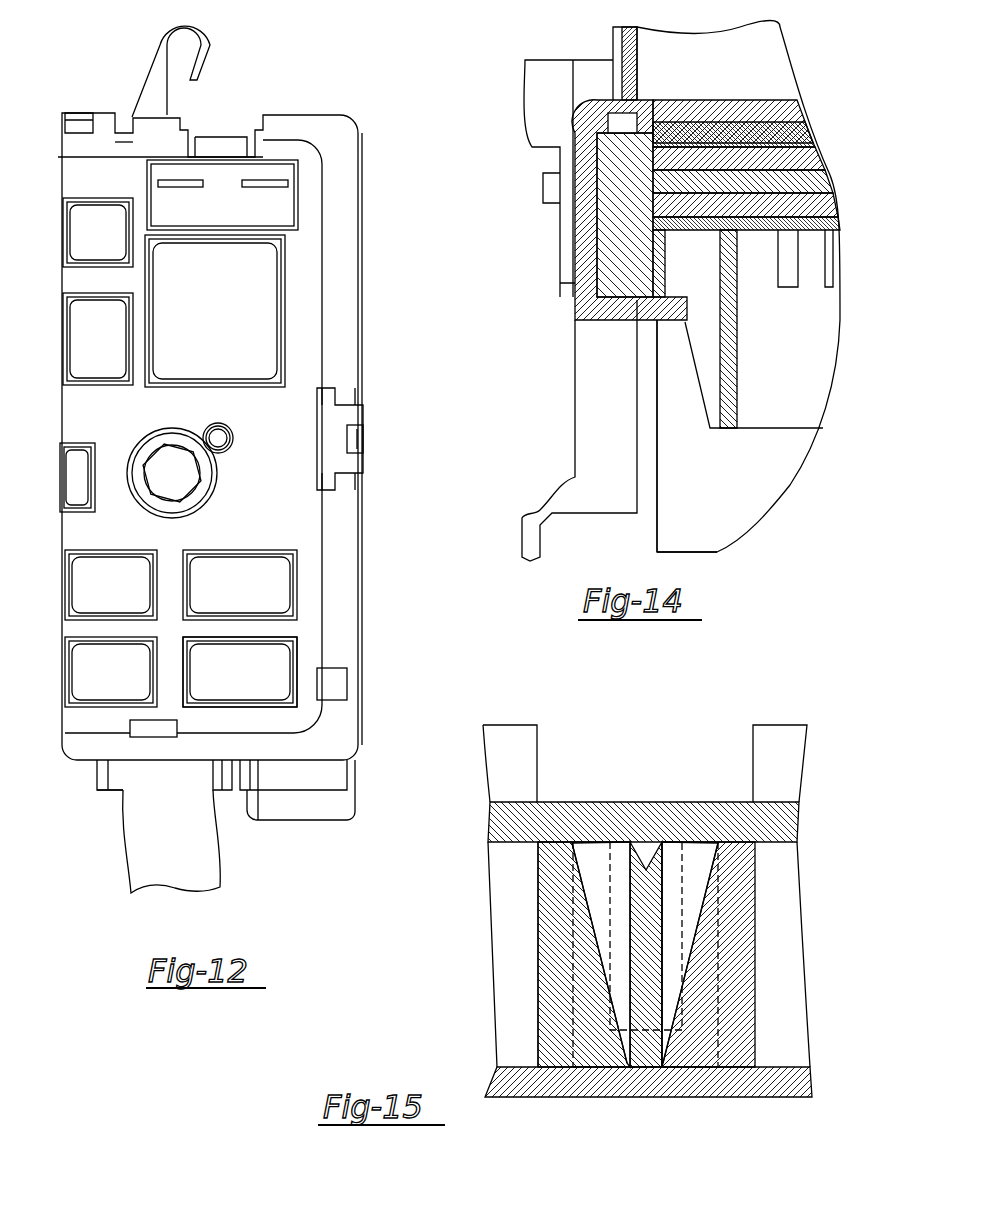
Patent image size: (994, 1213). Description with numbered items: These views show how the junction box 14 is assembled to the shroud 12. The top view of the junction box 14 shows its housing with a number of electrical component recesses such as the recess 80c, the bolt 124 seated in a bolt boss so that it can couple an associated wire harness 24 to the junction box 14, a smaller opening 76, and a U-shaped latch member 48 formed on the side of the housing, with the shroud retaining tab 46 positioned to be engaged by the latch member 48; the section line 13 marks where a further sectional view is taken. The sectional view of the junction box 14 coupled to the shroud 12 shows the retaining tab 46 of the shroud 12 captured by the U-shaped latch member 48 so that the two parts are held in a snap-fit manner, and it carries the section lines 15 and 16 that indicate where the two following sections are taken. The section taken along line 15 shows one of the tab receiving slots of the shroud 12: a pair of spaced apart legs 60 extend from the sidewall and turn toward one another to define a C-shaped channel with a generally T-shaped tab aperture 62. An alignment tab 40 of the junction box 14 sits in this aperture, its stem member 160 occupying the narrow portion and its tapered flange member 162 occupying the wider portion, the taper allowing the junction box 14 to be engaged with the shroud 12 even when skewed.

In FIG. 12, the shroud 12 is at (104, 789).
In FIG. 12, the junction box 14 is at (314, 322).
In FIG. 12, the wire harness 24 is at (131, 865).
In FIG. 12, the U-shaped latch member 48 is at (358, 415).
In FIG. 14, the U-shaped latch member 48 is at (567, 220).
In FIG. 12, the retaining tab 46 is at (362, 440).
In FIG. 14, the retaining tab 46 is at (565, 277).
In FIG. 12, the bolt 124 is at (157, 470).
In FIG. 12, the small receptacle 76 is at (218, 445).
In FIG. 12, the receptacle 80c is at (262, 572).
In FIG. 12, the section line 13- 13 is at (222, 395).
In FIG. 14, the section line 15- 15 is at (653, 73).
In FIG. 14, the section line 16- 16 is at (521, 125).
In FIG. 15, the leg 60 is at (548, 898).
In FIG. 15, the tab aperture 62 is at (538, 1013).
In FIG. 15, the stem member 160 is at (643, 858).
In FIG. 15, the flange member 162 is at (667, 872).
In FIG. 15, the alignment tab 40 is at (667, 977).